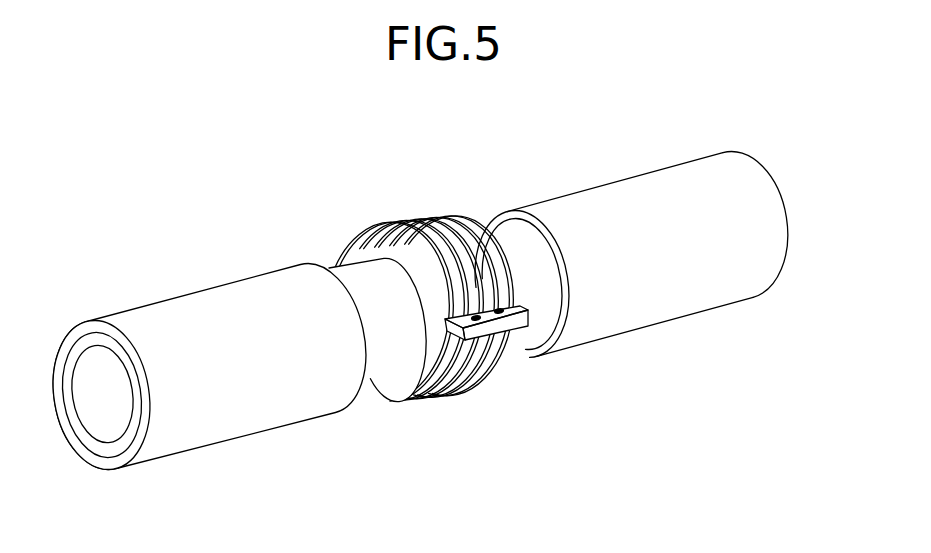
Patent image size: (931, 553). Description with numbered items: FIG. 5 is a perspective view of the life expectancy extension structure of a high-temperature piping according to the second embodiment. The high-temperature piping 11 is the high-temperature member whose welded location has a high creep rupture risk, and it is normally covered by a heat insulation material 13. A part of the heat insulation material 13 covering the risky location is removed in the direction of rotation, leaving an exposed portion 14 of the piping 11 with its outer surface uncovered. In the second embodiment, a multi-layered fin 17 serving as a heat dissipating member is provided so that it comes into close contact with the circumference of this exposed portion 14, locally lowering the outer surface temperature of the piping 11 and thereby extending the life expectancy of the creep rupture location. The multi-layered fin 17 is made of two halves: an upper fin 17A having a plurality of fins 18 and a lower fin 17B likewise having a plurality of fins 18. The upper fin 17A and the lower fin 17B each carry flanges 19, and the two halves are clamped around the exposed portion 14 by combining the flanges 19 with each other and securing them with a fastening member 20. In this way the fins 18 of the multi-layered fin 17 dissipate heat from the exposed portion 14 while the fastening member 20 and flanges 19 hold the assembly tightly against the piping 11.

The piping 11 is at (117, 448).
The heat insulation material 13 is at (292, 413).
The exposed portion 14 is at (391, 367).
The multi-layered fin 17 is at (740, 400).
The upper fin 17A is at (448, 203).
The lower fin 17B is at (455, 408).
The fins 18 is at (418, 223).
The flanges 19 is at (520, 323).
The fastening member 20 is at (527, 304).